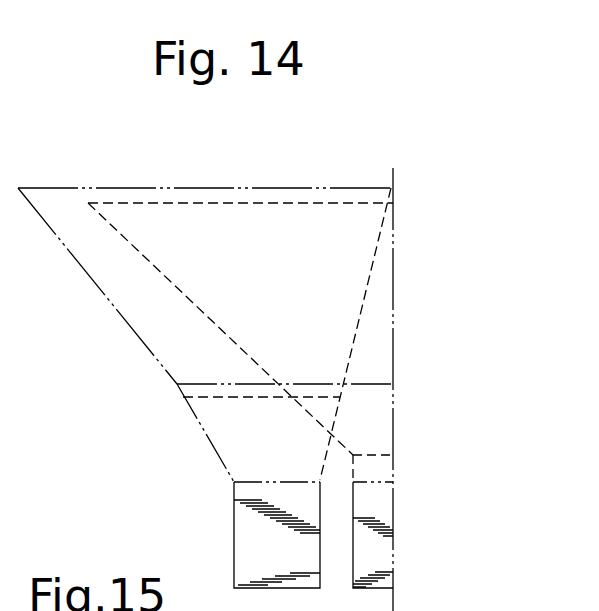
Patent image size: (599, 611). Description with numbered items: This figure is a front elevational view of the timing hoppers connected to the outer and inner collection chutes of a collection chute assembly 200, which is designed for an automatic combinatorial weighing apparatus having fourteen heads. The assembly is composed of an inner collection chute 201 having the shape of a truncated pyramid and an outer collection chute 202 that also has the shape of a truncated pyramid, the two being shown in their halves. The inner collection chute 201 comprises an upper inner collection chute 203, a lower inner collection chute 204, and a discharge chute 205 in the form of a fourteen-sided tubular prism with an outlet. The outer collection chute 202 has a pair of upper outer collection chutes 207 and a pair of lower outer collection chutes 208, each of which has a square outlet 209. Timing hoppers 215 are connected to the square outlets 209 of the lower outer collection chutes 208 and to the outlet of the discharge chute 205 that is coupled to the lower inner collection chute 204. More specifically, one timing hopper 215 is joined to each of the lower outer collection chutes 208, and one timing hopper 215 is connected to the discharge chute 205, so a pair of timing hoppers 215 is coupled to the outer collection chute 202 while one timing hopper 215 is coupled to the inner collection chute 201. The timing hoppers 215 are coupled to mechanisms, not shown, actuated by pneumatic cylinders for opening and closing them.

The collection chute assembly 200 is at (517, 278).
The inner collection chute 201 is at (160, 273).
The outer collection chute 202 is at (122, 317).
The upper inner collection chute 203 is at (266, 202).
The lower inner collection chute 204 is at (365, 384).
The discharge chute 205 is at (380, 465).
The upper outer collection chute 207 is at (117, 187).
The lower outer collection chute 208 is at (208, 438).
The square outlet 209 is at (278, 484).
The timing hopper 215 is at (243, 538).